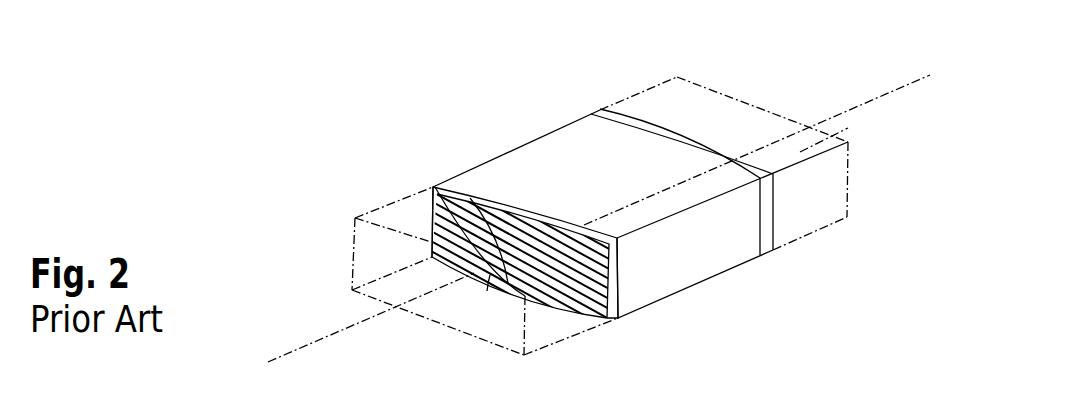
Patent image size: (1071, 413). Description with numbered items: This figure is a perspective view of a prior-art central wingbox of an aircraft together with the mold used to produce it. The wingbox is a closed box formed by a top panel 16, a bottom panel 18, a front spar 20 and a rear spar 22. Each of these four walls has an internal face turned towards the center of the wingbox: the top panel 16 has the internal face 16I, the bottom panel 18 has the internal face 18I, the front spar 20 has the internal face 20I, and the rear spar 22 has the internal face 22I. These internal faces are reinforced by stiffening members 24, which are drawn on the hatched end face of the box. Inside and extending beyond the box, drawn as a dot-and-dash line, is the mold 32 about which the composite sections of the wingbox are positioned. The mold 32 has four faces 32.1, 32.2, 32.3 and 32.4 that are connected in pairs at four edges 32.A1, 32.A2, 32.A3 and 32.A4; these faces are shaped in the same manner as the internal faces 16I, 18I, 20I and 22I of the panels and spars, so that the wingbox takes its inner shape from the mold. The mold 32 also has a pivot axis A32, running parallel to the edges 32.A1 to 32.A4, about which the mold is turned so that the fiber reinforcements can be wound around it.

The top panel 16 is at (560, 152).
The internal face of the top panel 16I is at (470, 198).
The bottom panel 18 is at (548, 303).
The internal face of the bottom panel 18I is at (487, 291).
The front spar 20 is at (508, 152).
The internal face of the front spar 20I is at (431, 240).
The rear spar 22 is at (698, 246).
The internal face of the rear spar 22I is at (592, 322).
The stiffening member 24 is at (433, 186).
The mold 32 is at (714, 94).
The face of the mold 32.1 is at (431, 232).
The face of the mold 32.2 is at (437, 323).
The face of the mold 32.3 is at (355, 238).
The face of the mold 32.4 is at (547, 332).
The edge of the mold 32.A1 is at (637, 91).
The edge of the mold 32.A2 is at (849, 129).
The edge of the mold 32.A3 is at (822, 243).
The edge of the mold 32.A4 is at (362, 293).
The pivot axis A32 is at (790, 132).